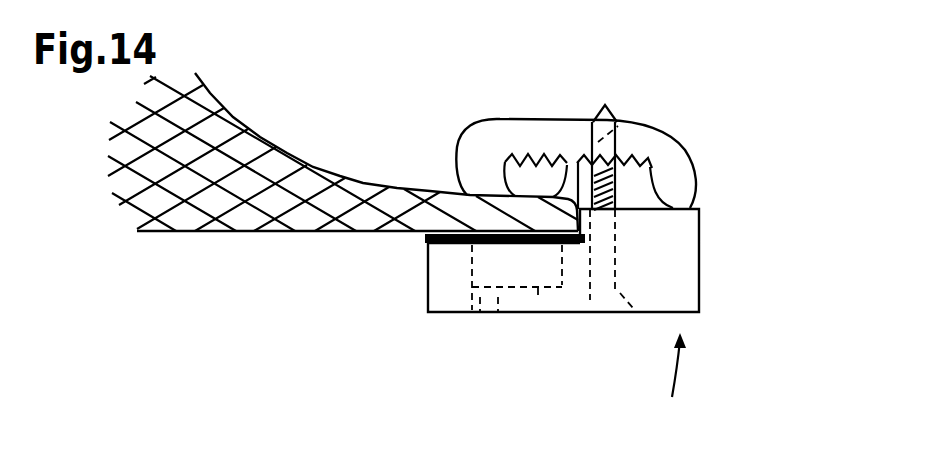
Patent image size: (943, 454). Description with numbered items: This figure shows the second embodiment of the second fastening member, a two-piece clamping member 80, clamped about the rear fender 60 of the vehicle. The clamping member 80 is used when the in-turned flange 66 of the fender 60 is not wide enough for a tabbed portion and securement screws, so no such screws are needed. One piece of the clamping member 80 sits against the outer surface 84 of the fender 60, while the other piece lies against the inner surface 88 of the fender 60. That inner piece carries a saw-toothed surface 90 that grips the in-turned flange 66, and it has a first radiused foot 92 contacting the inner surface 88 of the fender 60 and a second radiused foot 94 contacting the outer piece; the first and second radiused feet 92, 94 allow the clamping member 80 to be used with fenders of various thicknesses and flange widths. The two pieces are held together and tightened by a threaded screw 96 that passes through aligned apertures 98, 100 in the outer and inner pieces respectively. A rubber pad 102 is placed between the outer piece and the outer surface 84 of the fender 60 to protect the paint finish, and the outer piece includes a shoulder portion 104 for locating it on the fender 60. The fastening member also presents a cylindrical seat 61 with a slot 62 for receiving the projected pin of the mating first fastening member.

The rear fender 60 is at (200, 222).
The cylindrical seat 61 is at (440, 312).
The slot 62 is at (480, 315).
The in-turned flange 66 is at (582, 163).
The clamping member 80 is at (677, 383).
The outer surface 84 is at (313, 233).
The inner surface 88 is at (340, 173).
The saw-toothed surface 90 is at (538, 160).
The first radiused foot 92 is at (457, 187).
The second radiused foot 94 is at (657, 200).
The threaded screw 96 is at (617, 180).
The aperture 98 is at (577, 300).
The aperture 100 is at (622, 108).
The rubber pad 102 is at (425, 238).
The shoulder portion 104 is at (602, 200).